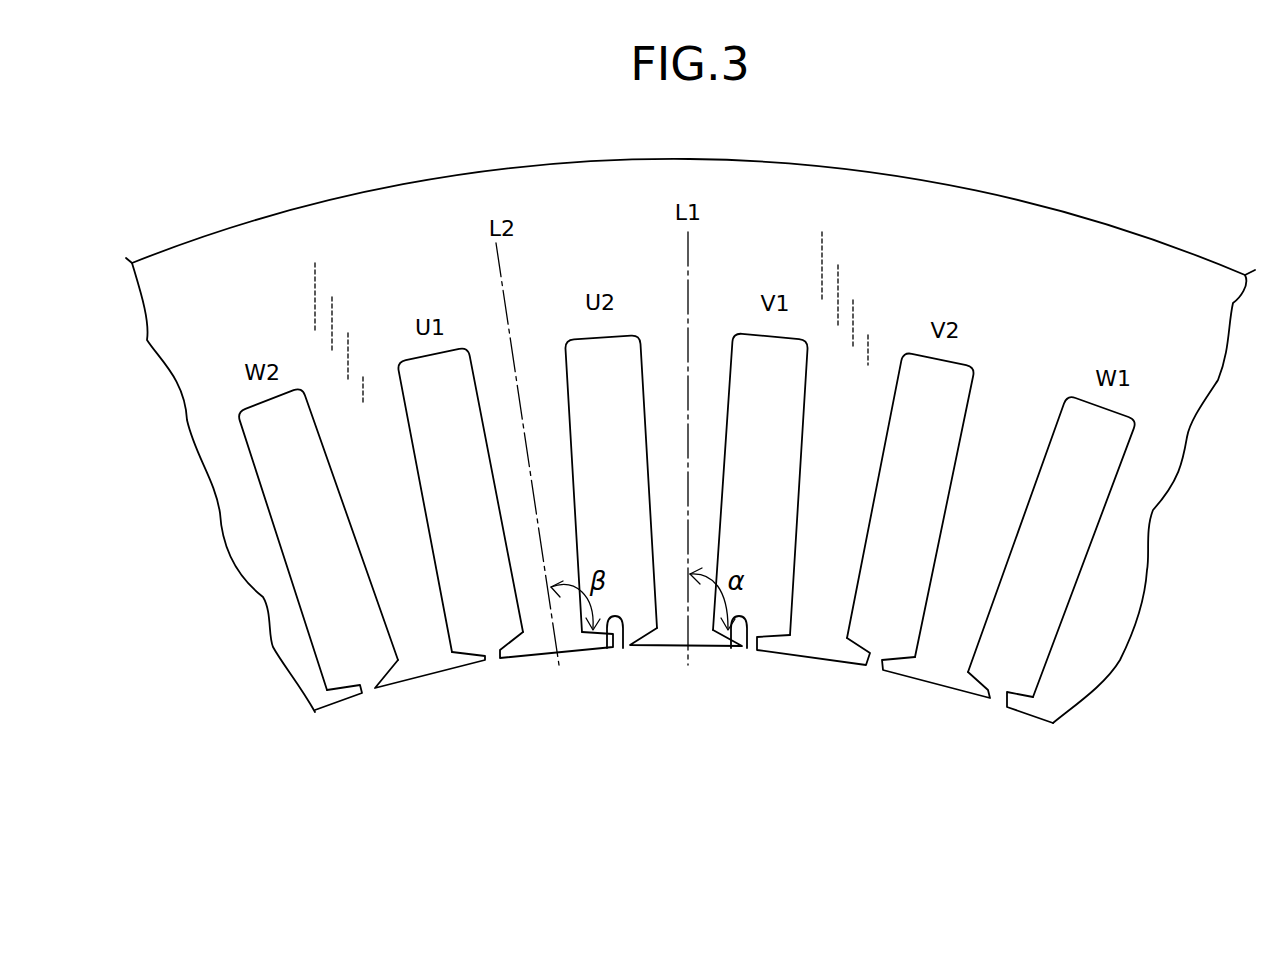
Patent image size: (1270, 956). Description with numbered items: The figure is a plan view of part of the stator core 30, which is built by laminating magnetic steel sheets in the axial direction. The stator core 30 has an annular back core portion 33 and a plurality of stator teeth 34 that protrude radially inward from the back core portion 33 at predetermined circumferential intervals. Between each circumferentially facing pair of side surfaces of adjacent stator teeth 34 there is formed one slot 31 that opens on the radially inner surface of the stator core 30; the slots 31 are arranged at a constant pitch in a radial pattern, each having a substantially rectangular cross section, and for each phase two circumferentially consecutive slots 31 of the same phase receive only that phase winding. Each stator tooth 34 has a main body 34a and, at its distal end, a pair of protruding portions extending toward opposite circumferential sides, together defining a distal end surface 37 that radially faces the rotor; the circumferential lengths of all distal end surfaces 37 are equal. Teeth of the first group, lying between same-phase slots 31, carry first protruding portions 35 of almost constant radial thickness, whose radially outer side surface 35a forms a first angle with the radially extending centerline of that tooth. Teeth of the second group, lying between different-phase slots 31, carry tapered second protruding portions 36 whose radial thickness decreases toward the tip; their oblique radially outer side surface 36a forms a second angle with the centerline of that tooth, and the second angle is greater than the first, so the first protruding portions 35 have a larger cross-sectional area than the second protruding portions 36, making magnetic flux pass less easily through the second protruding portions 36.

The stator core 30 is at (1023, 196).
The slot 31 is at (283, 492).
The back core portion 33 is at (323, 240).
The stator tooth 34 is at (270, 556).
The main body 34a is at (756, 564).
The first protruding portion 35 is at (353, 697).
The radially outer side surface of first protruding portion 35a is at (623, 649).
The second protruding portion 36 is at (393, 688).
The radially outer side surface of second protruding portion 36a is at (747, 649).
The distal end surface 37 is at (315, 712).